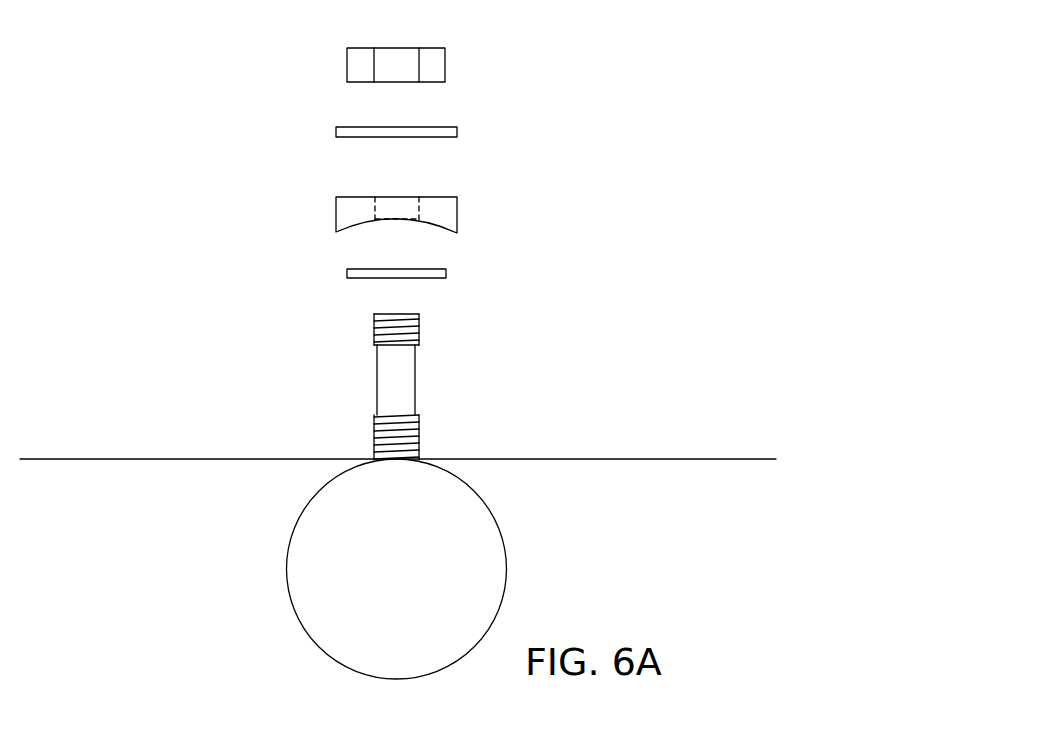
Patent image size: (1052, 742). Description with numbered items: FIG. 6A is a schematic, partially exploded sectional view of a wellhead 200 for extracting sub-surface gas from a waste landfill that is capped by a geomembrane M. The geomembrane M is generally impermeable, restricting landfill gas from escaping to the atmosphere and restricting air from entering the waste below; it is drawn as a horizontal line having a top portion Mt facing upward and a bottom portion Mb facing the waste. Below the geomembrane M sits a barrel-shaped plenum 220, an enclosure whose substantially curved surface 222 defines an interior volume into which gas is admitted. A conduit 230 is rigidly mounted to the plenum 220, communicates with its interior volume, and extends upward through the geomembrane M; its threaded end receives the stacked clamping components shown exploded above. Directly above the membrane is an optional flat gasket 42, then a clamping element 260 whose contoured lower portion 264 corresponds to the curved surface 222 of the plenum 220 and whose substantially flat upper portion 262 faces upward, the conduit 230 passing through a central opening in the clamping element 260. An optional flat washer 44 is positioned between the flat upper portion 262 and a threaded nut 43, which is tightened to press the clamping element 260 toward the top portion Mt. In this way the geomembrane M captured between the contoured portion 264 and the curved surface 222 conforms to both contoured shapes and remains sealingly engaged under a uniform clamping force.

The wellhead 200 is at (614, 71).
The threaded nut 43 is at (442, 62).
The flat washer 44 is at (457, 131).
The clamping element 260 is at (300, 178).
The flat upper portion 262 is at (445, 193).
The contoured lower portion 264 is at (344, 236).
The flat gasket 42 is at (447, 273).
The conduit 230 is at (460, 381).
The geomembrane M is at (722, 459).
The top portion of the geomembrane Mt is at (74, 447).
The bottom portion of the geomembrane Mb is at (683, 465).
The barrel-shaped plenum 220 is at (425, 569).
The curved surface 222 is at (286, 568).